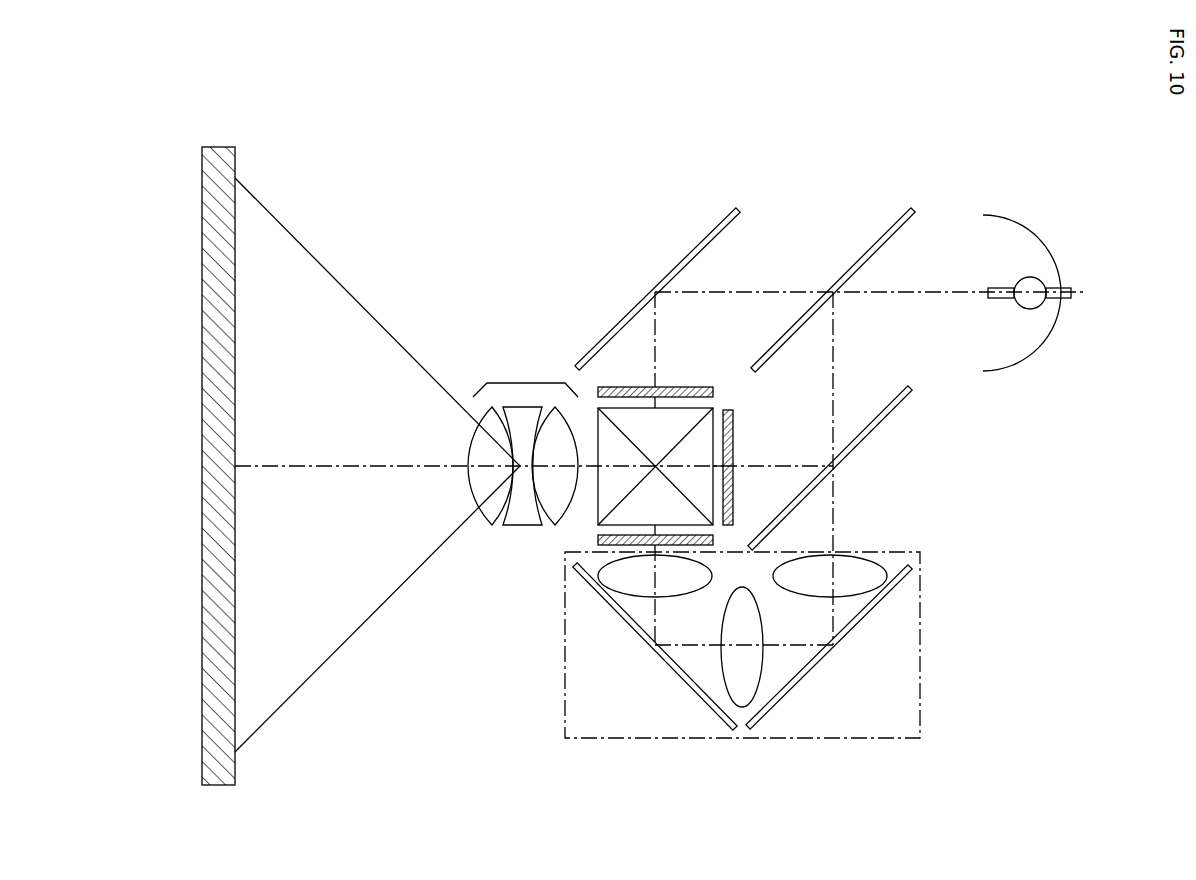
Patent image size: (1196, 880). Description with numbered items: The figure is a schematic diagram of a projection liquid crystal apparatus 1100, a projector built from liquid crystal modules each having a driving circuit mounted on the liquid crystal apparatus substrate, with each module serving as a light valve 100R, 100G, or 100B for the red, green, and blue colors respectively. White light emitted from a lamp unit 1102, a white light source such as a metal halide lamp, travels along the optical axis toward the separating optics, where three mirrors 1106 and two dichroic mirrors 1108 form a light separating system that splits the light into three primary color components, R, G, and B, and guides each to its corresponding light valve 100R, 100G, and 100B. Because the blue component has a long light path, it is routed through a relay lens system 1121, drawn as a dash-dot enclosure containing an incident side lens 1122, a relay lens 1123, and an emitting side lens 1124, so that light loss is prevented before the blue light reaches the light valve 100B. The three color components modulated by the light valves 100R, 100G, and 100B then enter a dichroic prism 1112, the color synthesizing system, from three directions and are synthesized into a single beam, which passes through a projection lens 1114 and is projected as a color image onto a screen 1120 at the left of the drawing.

The projection liquid crystal apparatus 1100 is at (942, 185).
The lamp unit 1102 is at (983, 377).
The mirror 1106 is at (688, 255).
The dichroic mirror 1108 is at (862, 257).
The dichroic prism 1112 is at (593, 510).
The projection lens 1114 is at (528, 383).
The screen 1120 is at (225, 768).
The relay lens system 1121 is at (922, 660).
The incident side lens 1122 is at (855, 577).
The relay lens 1123 is at (748, 677).
The emitting side lens 1124 is at (607, 578).
The light valve for R 100R is at (625, 387).
The light valve for G 100G is at (737, 410).
The light valve for B 100B is at (597, 540).